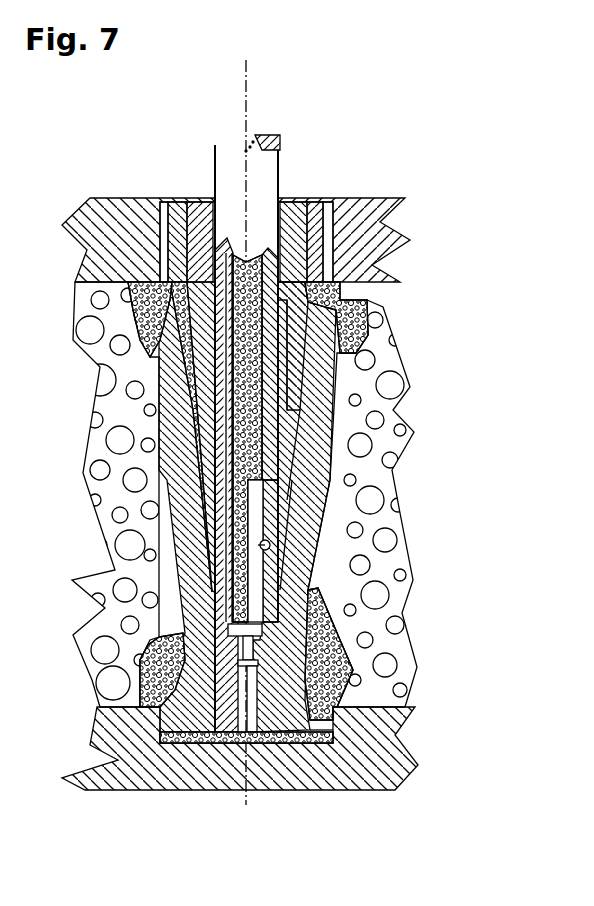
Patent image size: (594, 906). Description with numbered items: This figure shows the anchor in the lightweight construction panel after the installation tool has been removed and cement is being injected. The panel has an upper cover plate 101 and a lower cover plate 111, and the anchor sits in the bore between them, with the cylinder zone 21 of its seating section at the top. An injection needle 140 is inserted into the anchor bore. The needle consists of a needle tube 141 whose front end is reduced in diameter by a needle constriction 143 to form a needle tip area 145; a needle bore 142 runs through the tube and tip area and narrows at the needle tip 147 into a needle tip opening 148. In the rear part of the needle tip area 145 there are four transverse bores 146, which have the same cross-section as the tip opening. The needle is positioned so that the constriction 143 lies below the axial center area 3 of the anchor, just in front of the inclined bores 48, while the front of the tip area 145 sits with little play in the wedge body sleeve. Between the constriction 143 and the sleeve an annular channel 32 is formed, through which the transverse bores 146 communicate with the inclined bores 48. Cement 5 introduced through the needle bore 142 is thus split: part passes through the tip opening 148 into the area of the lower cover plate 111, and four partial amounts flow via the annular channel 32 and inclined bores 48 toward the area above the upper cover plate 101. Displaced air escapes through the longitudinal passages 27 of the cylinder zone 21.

The injection needle 140 is at (262, 170).
The cylinder zone 21 is at (316, 217).
The upper cover plate 101 is at (363, 238).
The longitudinal passages 27 is at (327, 257).
The needle tube 141 is at (270, 325).
The needle bore 142 is at (260, 353).
The cement 5 is at (257, 415).
The inclined bores 48 is at (305, 450).
The axial center area 3 is at (300, 472).
The needle constriction 143 is at (278, 512).
The transverse bores 146 is at (270, 547).
The annular channel 32 is at (275, 568).
The needle tip area 145 is at (262, 580).
The needle tip opening 148 is at (252, 643).
The needle tip 147 is at (255, 662).
The lower cover plate 111 is at (362, 750).